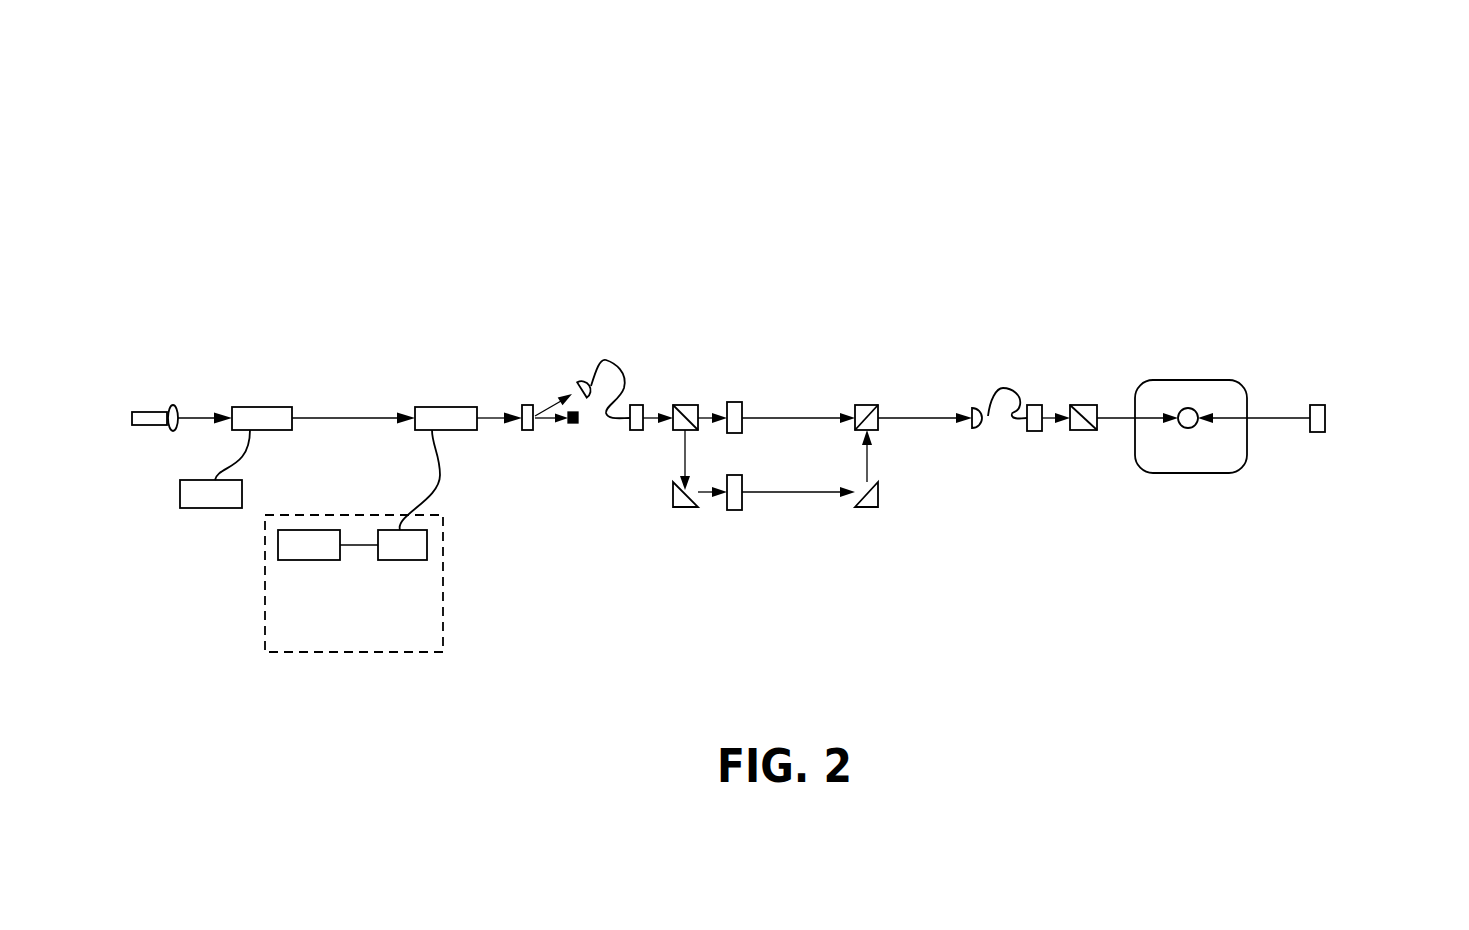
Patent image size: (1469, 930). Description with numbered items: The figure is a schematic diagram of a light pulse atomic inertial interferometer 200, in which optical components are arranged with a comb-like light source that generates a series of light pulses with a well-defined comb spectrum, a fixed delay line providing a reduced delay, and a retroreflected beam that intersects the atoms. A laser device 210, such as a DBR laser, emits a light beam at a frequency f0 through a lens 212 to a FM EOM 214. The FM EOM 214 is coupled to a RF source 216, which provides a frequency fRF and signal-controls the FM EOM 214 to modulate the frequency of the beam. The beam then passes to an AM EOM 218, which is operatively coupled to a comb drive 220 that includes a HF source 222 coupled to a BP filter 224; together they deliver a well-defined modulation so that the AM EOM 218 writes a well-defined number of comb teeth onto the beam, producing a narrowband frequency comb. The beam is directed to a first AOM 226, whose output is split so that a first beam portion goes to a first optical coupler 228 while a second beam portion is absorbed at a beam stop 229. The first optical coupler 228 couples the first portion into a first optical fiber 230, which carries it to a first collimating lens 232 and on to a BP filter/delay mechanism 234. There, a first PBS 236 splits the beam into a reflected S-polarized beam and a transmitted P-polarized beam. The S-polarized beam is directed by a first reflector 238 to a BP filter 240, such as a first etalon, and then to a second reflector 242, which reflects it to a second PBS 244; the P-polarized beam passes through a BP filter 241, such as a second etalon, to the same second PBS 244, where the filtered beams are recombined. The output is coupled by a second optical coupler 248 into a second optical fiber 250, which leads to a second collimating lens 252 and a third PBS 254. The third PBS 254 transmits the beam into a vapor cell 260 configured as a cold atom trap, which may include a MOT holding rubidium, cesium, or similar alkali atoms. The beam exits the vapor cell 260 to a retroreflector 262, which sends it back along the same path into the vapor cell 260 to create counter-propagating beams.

The light pulse atomic inertial interferometer 200 is at (196, 218).
The laser device 210 is at (160, 411).
The lens 212 is at (173, 432).
The FM EOM 214 is at (278, 430).
The RF source 216 is at (210, 508).
The AM EOM 218 is at (460, 430).
The comb drive 220 is at (339, 575).
The HF source 222 is at (288, 560).
The BP filter 224 is at (405, 560).
The first AOM 226 is at (530, 405).
The first optical coupler 228 is at (576, 384).
The beam stop 229 is at (573, 425).
The first optical fiber 230 is at (625, 380).
The first collimating lens 232 is at (637, 405).
The BP filter/delay mechanism 234 is at (775, 455).
The first PBS 236 is at (673, 430).
The first reflector 238 is at (673, 492).
The BP filter 240 is at (735, 510).
The BP filter 241 is at (734, 402).
The second reflector 242 is at (880, 493).
The second PBS 244 is at (866, 405).
The second optical coupler 248 is at (975, 430).
The second optical fiber 250 is at (1010, 388).
The second collimating lens 252 is at (1035, 405).
The third PBS 254 is at (1085, 405).
The vapor cell 260 is at (1188, 380).
The retroreflector 262 is at (1318, 405).